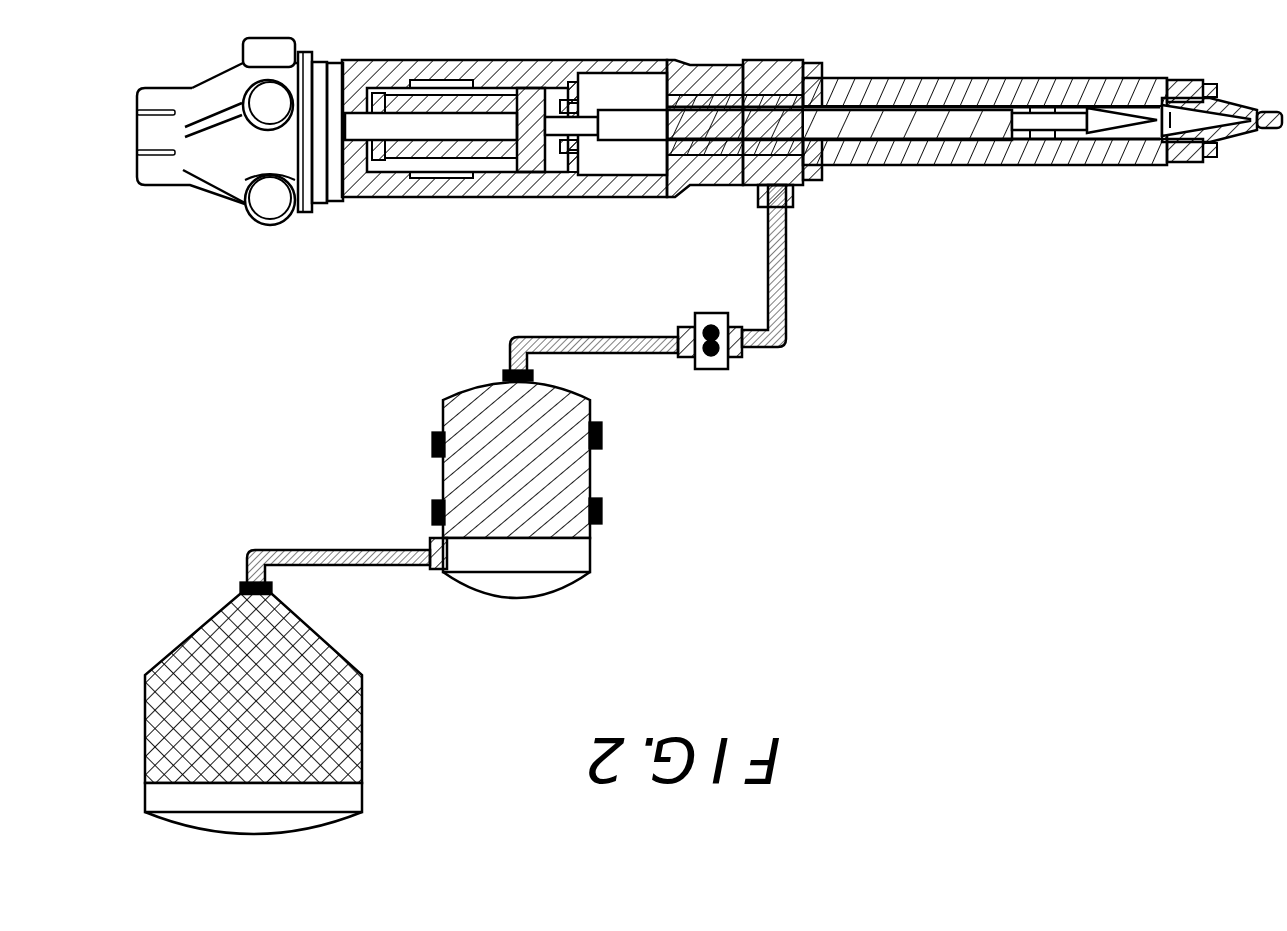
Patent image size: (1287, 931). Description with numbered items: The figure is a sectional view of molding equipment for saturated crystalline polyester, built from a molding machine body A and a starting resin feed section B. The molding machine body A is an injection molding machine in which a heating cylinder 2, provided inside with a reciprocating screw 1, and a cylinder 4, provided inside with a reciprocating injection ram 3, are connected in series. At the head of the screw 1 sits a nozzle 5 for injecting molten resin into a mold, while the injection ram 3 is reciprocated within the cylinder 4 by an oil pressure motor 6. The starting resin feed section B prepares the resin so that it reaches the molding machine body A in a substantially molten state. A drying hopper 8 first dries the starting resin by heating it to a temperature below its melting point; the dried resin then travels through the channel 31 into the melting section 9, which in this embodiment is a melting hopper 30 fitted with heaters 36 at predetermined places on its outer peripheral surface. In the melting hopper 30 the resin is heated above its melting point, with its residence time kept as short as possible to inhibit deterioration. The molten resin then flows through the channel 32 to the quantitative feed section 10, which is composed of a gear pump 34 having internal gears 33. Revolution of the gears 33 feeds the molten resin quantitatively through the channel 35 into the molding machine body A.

The reciprocating screw 1 is at (912, 128).
The heating cylinder 2 is at (1060, 152).
The reciprocating injection ram 3 is at (503, 147).
The cylinder 4 is at (505, 92).
The nozzle 5 is at (1273, 112).
The oil pressure motor 6 is at (230, 173).
The drying hopper 8 is at (365, 730).
The melting section 9 is at (596, 603).
The quantitative feed section 10 is at (752, 376).
The melting hopper 30 is at (570, 475).
The channel 31 is at (352, 547).
The channel 32 is at (598, 337).
The internal gears 33 is at (712, 318).
The gear pump 34 is at (711, 370).
The channel 35 is at (790, 272).
The heaters 36 is at (600, 513).
The molding machine body A is at (152, 238).
The starting resin feed section B is at (312, 453).